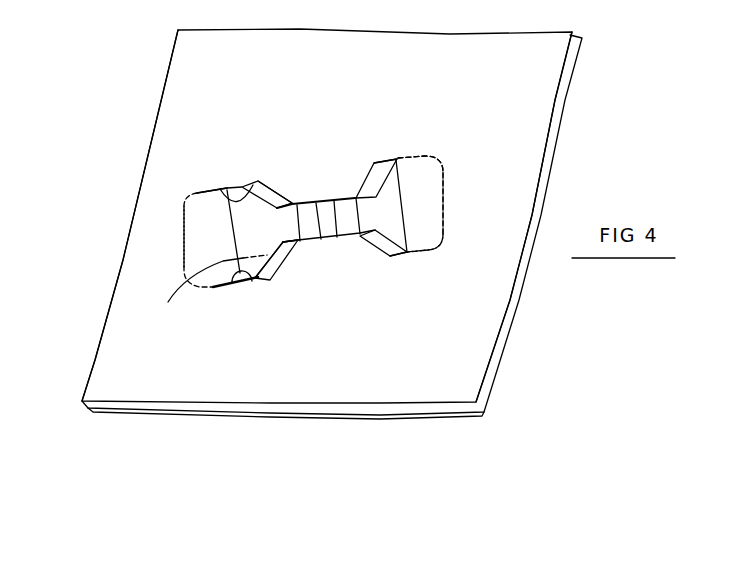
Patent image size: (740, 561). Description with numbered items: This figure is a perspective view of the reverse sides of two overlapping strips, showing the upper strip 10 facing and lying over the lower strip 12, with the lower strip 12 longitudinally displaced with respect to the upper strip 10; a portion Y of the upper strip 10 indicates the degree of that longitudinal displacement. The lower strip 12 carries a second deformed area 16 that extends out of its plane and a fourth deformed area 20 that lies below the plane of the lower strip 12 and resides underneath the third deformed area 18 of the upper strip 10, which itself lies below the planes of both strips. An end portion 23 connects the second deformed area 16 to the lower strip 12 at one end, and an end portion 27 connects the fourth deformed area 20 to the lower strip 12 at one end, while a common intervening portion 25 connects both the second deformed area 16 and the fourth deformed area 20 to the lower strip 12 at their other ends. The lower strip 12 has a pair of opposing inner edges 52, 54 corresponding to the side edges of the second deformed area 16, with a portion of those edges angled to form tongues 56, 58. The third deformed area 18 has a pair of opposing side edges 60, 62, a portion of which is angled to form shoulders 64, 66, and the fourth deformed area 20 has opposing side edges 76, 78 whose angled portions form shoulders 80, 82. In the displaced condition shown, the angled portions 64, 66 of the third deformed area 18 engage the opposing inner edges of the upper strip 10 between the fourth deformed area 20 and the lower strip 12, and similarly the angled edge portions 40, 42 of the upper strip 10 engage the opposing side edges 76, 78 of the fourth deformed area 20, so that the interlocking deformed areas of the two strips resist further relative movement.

The upper strip 10 is at (135, 408).
The lower strip 12 is at (98, 347).
The second deformed area 16 is at (397, 225).
The third deformed area 18 is at (277, 263).
The fourth deformed area 20 is at (240, 245).
The end portion 23 is at (440, 217).
The intervening portion 25 is at (315, 203).
The end portion 27 is at (227, 248).
The tongue 40 is at (435, 170).
The tongue 42 is at (395, 245).
The inner edge 52 is at (388, 160).
The inner edge 54 is at (402, 255).
The tongue 56 is at (363, 170).
The tongue 58 is at (378, 257).
The side edge 60 is at (250, 182).
The side edge 62 is at (268, 282).
The shoulder 64 is at (275, 188).
The shoulder 66 is at (282, 260).
The side edge 76 is at (237, 182).
The side edge 78 is at (228, 293).
The shoulder 80 is at (217, 197).
The shoulder 82 is at (205, 288).
The portion of strip Y is at (537, 197).